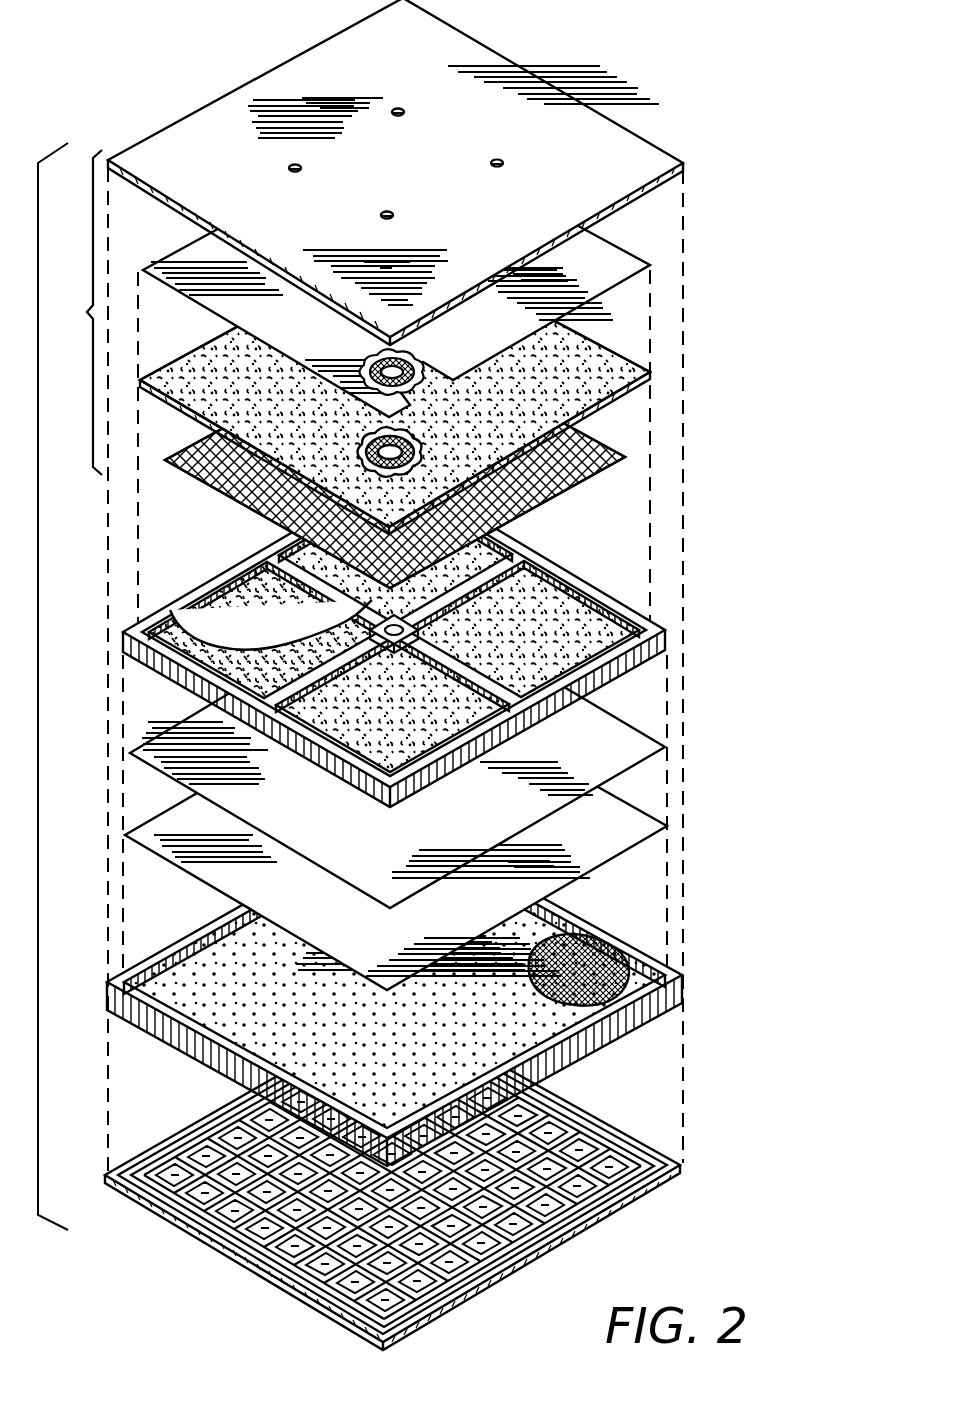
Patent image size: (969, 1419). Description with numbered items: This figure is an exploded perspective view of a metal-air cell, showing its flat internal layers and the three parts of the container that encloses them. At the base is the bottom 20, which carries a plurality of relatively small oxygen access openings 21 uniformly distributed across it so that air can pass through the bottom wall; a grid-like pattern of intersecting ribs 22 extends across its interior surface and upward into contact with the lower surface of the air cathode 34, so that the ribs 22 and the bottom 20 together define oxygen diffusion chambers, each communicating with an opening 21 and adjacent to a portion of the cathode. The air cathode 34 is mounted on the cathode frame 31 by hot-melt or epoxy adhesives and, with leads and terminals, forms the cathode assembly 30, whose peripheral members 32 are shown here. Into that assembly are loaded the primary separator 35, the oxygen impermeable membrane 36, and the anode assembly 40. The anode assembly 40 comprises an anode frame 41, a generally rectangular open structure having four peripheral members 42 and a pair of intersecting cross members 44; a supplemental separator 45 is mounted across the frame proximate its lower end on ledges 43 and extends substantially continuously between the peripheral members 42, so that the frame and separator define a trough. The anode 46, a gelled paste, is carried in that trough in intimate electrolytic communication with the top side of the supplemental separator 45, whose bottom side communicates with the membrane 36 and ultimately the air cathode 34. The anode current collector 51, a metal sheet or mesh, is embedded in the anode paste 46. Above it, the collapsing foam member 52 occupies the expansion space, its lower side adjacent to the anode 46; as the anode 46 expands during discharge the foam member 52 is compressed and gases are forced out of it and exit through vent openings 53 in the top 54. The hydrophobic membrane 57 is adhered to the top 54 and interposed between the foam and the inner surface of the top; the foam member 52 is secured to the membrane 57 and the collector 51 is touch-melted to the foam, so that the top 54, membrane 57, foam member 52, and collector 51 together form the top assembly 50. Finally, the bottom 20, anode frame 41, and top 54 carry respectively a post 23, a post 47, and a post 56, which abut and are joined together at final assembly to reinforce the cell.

The bottom 20 is at (186, 1239).
The oxygen access openings 21 is at (610, 1158).
The ribs 22 is at (545, 1180).
The post 23 is at (228, 1126).
The cathode assembly 30 is at (99, 986).
The cathode frame 31 is at (684, 982).
The tray side wall 32 is at (652, 1015).
The air cathode 34 is at (578, 1035).
The primary separator 35 is at (612, 858).
The oxygen impermeable membrane 36 is at (625, 773).
The anode assembly 40 is at (116, 636).
The anode frame 41 is at (667, 630).
The peripheral members 42 is at (640, 660).
The ledges 43 is at (220, 600).
The cross members 44 is at (545, 688).
The supplemental separator 45 is at (205, 622).
The anode 46 is at (600, 604).
The post 47 is at (383, 640).
The top assembly 50 is at (77, 312).
The anode current collector 51 is at (596, 473).
The foam member 52 is at (616, 393).
The vent openings 53 is at (503, 163).
The top 54 is at (488, 66).
The post 56 is at (372, 188).
The hydrophobic membrane 57 is at (606, 292).